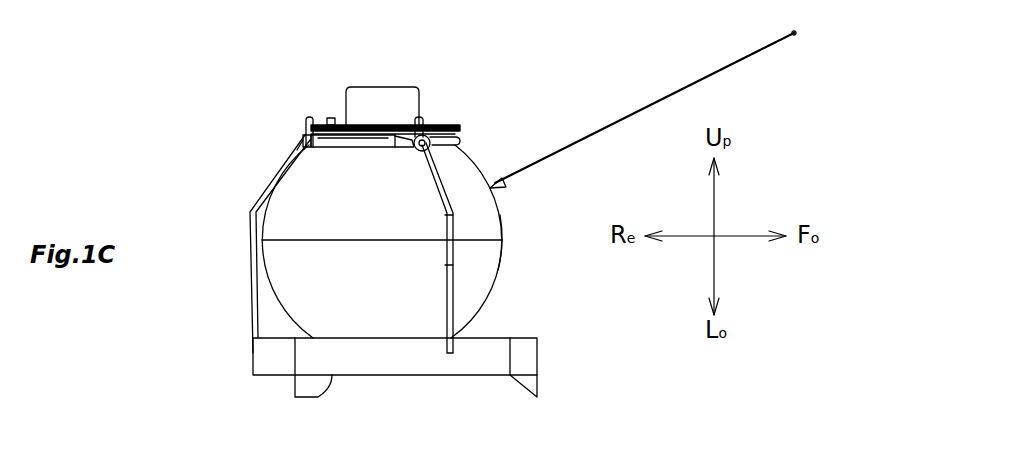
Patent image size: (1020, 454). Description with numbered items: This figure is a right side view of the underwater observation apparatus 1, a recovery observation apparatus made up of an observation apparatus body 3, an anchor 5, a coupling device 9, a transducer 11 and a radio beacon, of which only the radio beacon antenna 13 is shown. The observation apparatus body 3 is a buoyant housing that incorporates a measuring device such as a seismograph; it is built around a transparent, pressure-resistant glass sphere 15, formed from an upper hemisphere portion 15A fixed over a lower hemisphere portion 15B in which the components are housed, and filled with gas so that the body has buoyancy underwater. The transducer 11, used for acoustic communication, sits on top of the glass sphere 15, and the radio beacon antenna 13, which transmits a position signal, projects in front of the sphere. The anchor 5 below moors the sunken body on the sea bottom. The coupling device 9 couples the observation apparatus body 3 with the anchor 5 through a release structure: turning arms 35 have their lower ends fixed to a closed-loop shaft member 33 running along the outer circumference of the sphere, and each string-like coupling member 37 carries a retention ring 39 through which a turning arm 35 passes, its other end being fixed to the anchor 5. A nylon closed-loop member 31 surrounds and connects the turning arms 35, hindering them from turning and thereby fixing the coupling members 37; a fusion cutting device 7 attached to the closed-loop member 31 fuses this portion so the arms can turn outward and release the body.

The underwater observation apparatus 1 is at (492, 72).
The observation apparatus body 3 is at (467, 158).
The anchor 5 is at (538, 351).
The fusion cutting device 7 is at (321, 125).
The coupling device 9 is at (458, 124).
The transducer 11 is at (420, 94).
The radio beacon antenna 13 is at (586, 135).
The glass sphere 15 is at (503, 186).
The upper hemisphere portion 15A is at (505, 228).
The lower hemisphere portion 15B is at (501, 263).
The closed-loop member 31 is at (302, 139).
The closed-loop shaft member 33 is at (335, 148).
The turning arm 35 is at (303, 120).
The coupling member 37 is at (445, 279).
The retention ring 39 is at (420, 152).